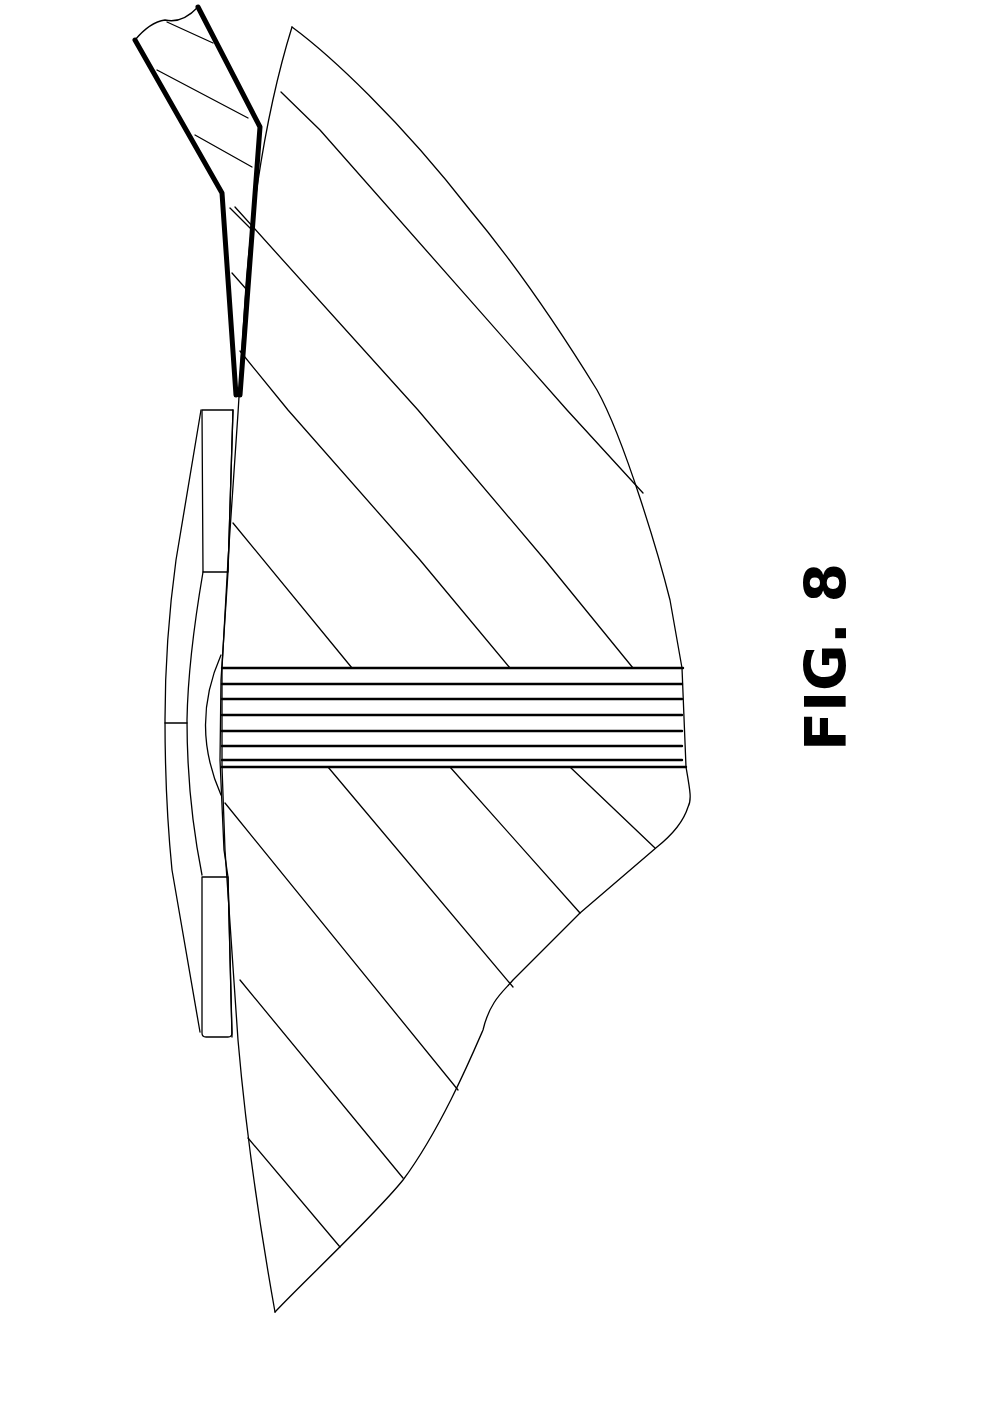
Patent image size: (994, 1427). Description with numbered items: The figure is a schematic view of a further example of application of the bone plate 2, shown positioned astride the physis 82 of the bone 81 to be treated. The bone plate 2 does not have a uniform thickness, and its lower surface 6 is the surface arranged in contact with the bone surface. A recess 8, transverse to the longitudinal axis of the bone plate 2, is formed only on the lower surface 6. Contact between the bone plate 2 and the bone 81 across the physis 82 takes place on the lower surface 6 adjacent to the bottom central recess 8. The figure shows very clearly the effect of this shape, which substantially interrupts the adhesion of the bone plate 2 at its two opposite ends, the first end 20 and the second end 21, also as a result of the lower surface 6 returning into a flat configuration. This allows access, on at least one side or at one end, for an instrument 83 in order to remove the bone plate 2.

The bone plate 2 is at (137, 893).
The lower surface 6 is at (227, 547).
The recess 8 is at (212, 723).
The first end 20 is at (218, 1022).
The second end 21 is at (215, 440).
The bone 81 is at (483, 370).
The physis 82 is at (617, 698).
The instrument 83 is at (200, 115).